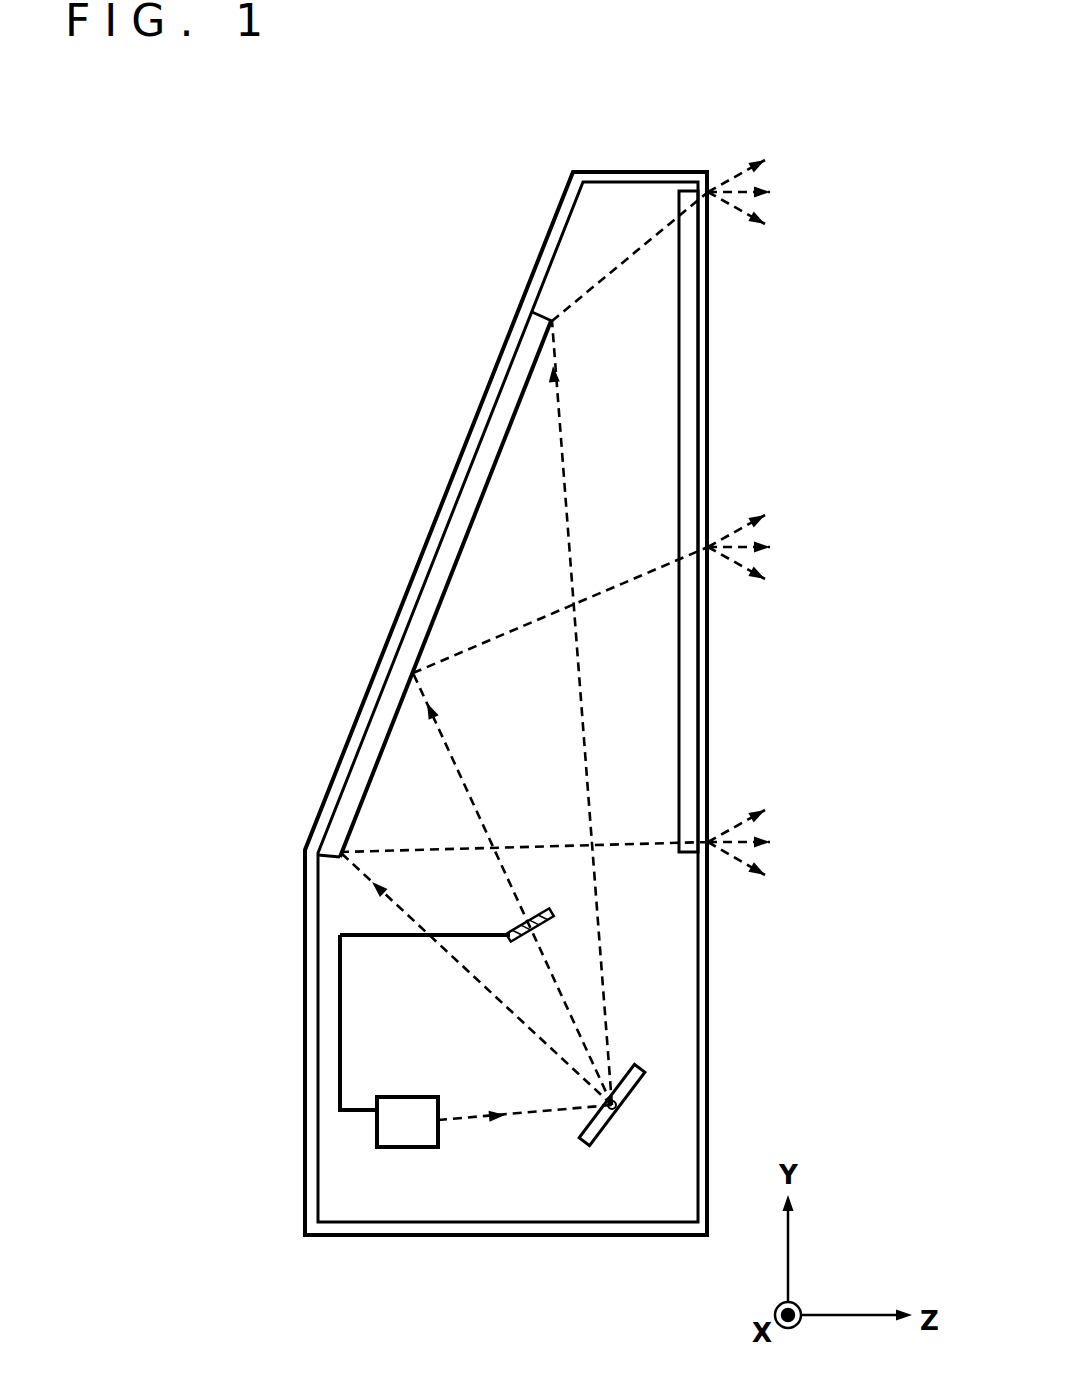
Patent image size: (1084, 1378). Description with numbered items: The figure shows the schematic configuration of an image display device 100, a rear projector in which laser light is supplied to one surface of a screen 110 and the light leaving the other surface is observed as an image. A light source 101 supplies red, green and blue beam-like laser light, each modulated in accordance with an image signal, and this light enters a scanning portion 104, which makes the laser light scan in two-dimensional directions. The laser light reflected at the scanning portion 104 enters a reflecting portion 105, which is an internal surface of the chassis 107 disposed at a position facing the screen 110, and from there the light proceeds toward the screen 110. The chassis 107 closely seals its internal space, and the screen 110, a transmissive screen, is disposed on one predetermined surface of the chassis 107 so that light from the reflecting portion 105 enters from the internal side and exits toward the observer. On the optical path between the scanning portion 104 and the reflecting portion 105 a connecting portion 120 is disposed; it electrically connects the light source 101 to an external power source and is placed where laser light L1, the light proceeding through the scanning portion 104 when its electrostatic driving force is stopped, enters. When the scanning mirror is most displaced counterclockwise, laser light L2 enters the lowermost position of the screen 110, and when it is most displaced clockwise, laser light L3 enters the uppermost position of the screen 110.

The image display device 100 is at (428, 276).
The light source 101 is at (390, 1128).
The scanning portion 104 is at (606, 1138).
The reflecting portion 105 is at (356, 780).
The chassis 107 is at (708, 1047).
The screen 110 is at (700, 435).
The connecting portion 120 is at (510, 925).
The laser light L1 is at (607, 582).
The laser light L2 is at (637, 846).
The laser light L3 is at (598, 274).